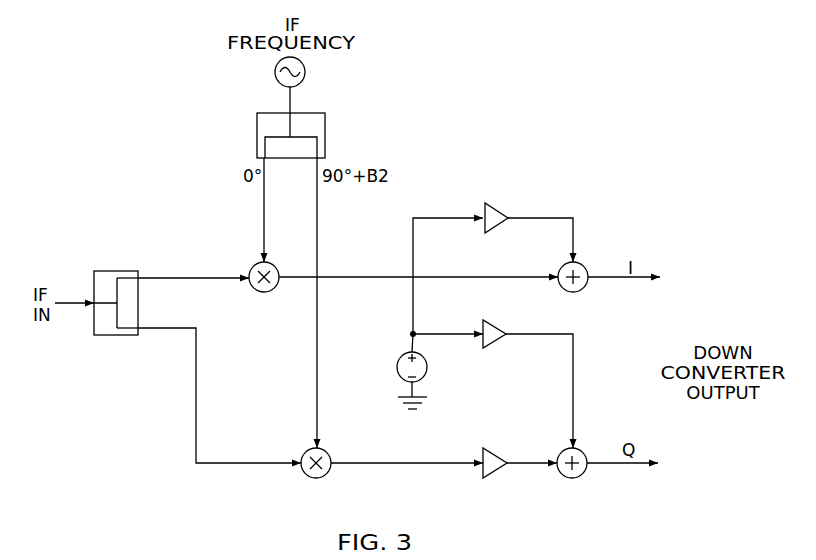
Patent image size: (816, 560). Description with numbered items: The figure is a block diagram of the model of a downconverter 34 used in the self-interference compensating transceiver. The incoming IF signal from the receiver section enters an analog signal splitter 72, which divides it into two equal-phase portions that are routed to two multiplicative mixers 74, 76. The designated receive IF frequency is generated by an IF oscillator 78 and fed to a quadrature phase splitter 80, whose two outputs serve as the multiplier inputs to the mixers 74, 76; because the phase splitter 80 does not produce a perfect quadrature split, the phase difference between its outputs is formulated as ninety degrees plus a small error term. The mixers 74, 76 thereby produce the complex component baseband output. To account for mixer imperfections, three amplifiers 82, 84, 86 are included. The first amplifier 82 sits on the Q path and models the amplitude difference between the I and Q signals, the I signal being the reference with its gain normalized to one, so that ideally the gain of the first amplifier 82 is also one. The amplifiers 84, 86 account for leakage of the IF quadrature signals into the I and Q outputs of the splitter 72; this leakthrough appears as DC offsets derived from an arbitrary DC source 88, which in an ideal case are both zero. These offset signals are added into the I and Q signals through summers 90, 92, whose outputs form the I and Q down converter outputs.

The downconverter 34 is at (490, 97).
The analog signal splitter 72 is at (118, 271).
The multiplicative mixer 74 is at (254, 266).
The multiplicative mixer 76 is at (303, 453).
The IF oscillator 78 is at (305, 75).
The phase splitter 80 is at (257, 137).
The first amplifier 82 is at (498, 453).
The amplifier 84 is at (500, 205).
The amplifier 86 is at (497, 322).
The DC source 88 is at (397, 368).
The summer 90 is at (586, 266).
The summer 92 is at (575, 478).